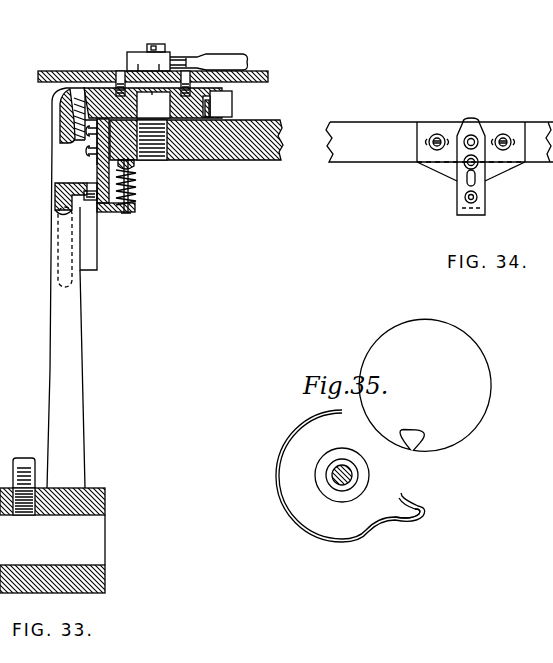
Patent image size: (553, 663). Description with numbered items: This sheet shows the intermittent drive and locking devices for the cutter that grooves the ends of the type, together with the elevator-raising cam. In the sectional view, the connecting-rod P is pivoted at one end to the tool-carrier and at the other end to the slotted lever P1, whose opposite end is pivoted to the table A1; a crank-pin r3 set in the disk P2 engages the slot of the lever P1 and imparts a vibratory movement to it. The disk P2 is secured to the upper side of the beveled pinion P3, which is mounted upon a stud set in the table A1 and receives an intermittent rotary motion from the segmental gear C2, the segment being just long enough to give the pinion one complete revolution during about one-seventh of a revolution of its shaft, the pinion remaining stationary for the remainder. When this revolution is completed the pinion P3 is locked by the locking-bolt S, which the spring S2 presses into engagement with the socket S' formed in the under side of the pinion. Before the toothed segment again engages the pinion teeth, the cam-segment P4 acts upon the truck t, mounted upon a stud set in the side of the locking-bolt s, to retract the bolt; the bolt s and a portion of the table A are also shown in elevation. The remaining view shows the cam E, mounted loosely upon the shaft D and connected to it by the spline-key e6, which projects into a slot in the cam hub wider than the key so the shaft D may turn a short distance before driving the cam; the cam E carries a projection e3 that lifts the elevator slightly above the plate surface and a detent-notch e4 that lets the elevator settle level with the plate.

In FIG. 33, the disk P2 is at (72, 71).
In FIG. 33, the slotted lever P1 is at (131, 57).
In FIG. 33, the crank-pin r3 is at (155, 45).
In FIG. 33, the connecting-rod P is at (240, 56).
In FIG. 33, the segmental gear C2 is at (56, 97).
In FIG. 33, the locking-bolt S is at (85, 124).
In FIG. 33, the socket S' is at (226, 104).
In FIG. 33, the beveled pinion P3 is at (215, 95).
In FIG. 33, the table A1 is at (210, 184).
In FIG. 33, the spring S2 is at (135, 185).
In FIG. 33, the truck t is at (86, 197).
In FIG. 34, the truck t is at (478, 197).
In FIG. 33, the cam-segment P4 is at (72, 316).
In FIG. 34, the table A is at (375, 148).
In FIG. 34, the locking-bolt s is at (472, 123).
In FIG. 35, the cam E is at (318, 475).
In FIG. 35, the shaft D is at (352, 475).
In FIG. 35, the spline-key e6 is at (340, 486).
In FIG. 35, the projection e3 is at (401, 515).
In FIG. 35, the detent-notch e4 is at (428, 519).